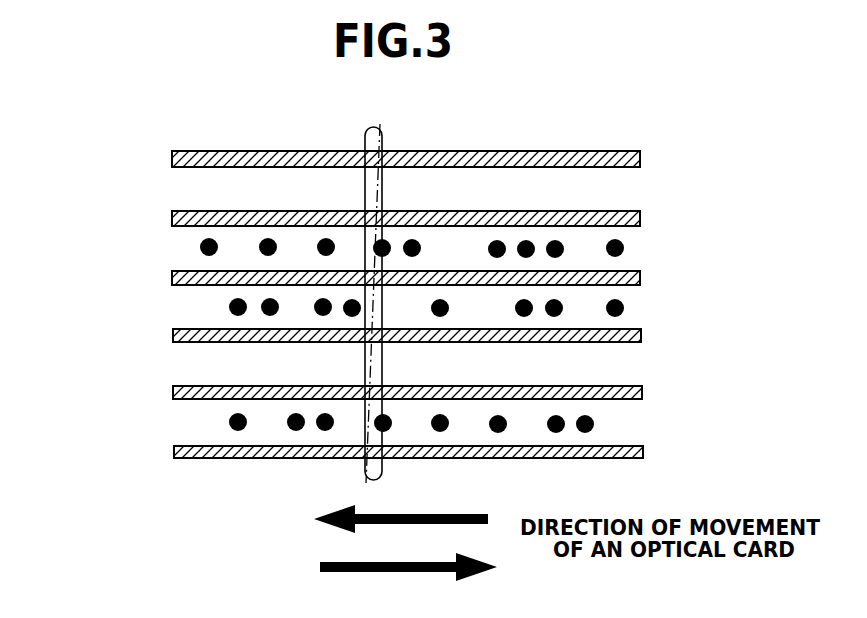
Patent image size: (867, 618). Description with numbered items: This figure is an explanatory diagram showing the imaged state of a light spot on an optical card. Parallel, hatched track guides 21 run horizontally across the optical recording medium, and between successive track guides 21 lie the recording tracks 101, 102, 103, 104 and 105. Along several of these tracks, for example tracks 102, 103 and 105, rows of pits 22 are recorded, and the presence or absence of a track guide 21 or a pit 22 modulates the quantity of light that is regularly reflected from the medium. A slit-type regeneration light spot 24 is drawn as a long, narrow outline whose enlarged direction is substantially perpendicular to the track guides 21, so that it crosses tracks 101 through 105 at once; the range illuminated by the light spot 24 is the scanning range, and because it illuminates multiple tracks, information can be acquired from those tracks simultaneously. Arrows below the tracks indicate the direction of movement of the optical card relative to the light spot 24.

The track 101 is at (190, 191).
The track 102 is at (187, 252).
The track 103 is at (195, 311).
The track 104 is at (190, 368).
The track 105 is at (185, 428).
The track guide 21 is at (173, 338).
The pit 22 is at (622, 245).
The slit-type regeneration light spot 24 is at (383, 202).